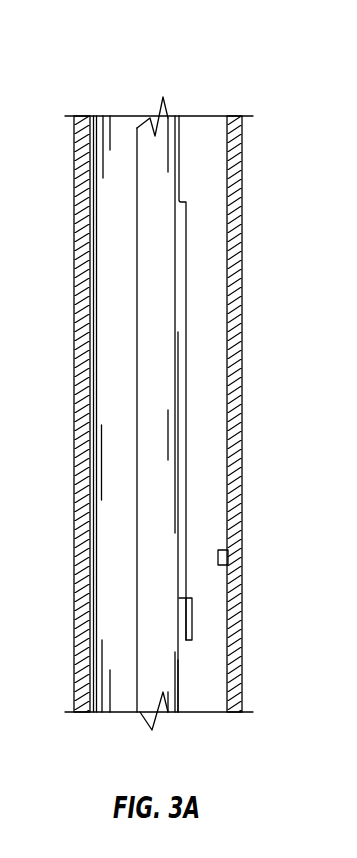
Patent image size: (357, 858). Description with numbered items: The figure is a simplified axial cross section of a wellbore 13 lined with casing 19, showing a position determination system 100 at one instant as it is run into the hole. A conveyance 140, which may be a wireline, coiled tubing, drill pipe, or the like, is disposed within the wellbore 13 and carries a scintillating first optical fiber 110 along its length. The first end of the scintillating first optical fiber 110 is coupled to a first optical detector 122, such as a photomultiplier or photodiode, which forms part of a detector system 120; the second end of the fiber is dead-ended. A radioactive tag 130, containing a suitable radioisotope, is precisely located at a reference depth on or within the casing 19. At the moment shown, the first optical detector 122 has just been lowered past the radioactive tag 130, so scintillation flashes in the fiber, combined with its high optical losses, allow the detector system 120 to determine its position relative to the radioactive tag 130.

The position determination system 100 is at (197, 63).
The wellbore 13 is at (129, 135).
The casing 19 is at (74, 338).
The scintillating first optical fiber 110 is at (186, 322).
The radioactive tag 130 is at (228, 555).
The first optical detector 122 is at (188, 595).
The detector system 120 is at (192, 618).
The conveyance 140 is at (180, 672).